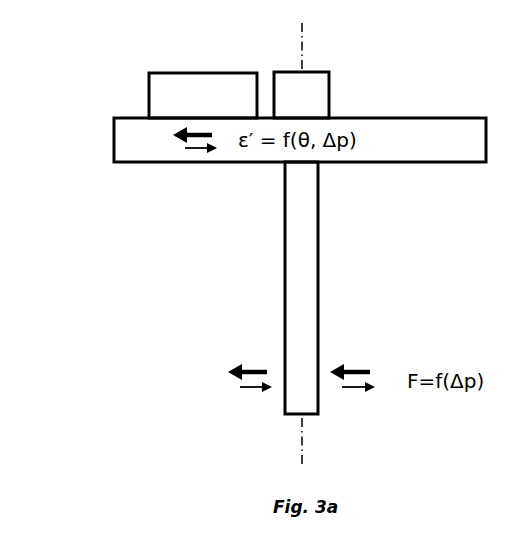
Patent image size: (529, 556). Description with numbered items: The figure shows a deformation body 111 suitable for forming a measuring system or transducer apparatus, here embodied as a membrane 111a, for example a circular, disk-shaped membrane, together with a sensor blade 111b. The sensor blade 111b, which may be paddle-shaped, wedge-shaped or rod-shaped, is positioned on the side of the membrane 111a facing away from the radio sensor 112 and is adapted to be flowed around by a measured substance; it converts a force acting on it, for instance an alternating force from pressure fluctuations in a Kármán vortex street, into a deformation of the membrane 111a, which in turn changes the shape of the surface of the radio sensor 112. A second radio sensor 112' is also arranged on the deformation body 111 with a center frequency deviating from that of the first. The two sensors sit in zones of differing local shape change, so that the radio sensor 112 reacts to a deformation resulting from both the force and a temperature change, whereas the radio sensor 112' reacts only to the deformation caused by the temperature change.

The deformation body 111 is at (143, 244).
The membrane 111a is at (462, 125).
The sensor blade 111b is at (293, 266).
The radio sensor 112 is at (203, 95).
The second radio sensor 112' is at (342, 95).